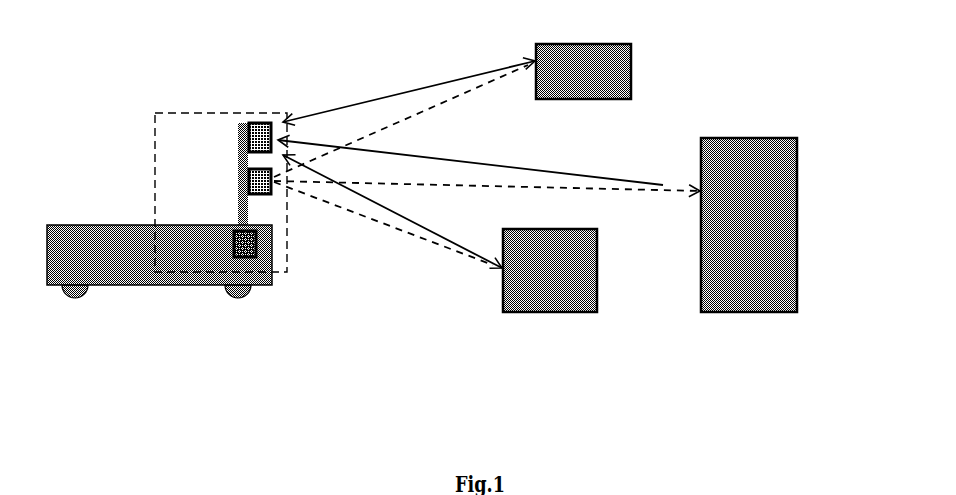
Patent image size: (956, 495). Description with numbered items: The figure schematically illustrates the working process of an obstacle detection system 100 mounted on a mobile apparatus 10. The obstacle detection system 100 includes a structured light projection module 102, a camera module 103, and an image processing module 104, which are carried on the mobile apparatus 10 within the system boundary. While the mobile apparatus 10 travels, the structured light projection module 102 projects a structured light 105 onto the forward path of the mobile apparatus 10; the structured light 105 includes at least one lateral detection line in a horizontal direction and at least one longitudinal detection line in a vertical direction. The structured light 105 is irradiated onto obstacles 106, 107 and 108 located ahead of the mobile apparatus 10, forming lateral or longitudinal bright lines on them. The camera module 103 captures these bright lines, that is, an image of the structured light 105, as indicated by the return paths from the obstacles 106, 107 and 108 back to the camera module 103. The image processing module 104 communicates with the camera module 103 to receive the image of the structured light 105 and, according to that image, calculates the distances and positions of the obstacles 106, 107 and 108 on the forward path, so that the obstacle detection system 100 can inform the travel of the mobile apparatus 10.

The mobile apparatus 10 is at (117, 302).
The obstacle detection system 100 is at (240, 83).
The structured light projection module 102 is at (248, 192).
The camera module 103 is at (248, 140).
The image processing module 104 is at (257, 237).
The structured light 105 is at (390, 124).
The obstacle 106 is at (548, 302).
The obstacle 107 is at (798, 217).
The obstacle 108 is at (632, 77).